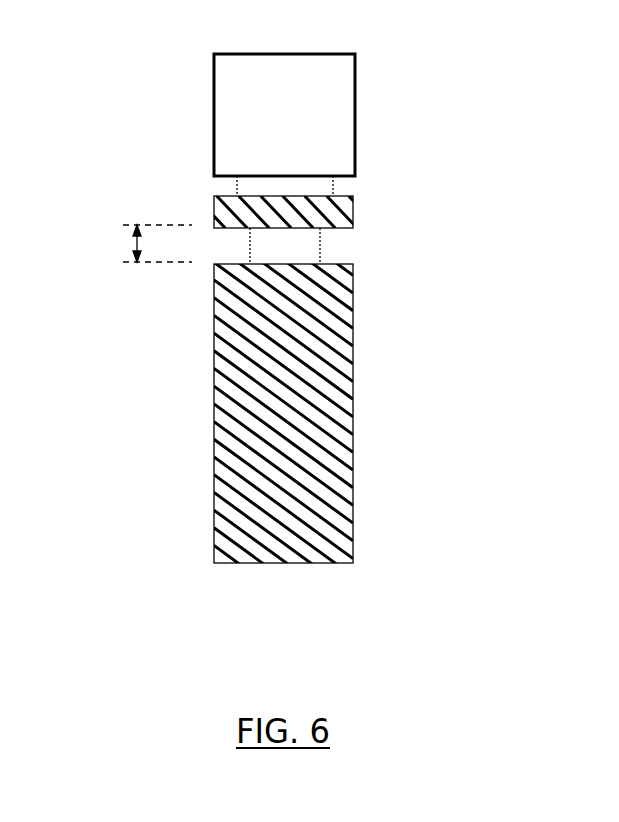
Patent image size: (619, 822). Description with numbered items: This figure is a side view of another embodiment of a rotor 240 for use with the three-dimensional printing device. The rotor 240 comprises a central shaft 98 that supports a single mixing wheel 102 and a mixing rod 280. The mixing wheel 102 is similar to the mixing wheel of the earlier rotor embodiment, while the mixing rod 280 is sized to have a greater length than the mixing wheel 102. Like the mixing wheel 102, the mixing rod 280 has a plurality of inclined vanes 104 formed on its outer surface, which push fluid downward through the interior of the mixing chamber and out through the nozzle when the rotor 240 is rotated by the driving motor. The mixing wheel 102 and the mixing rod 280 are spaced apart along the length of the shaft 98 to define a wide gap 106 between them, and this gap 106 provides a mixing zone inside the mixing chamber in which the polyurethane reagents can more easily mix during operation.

The rotor 240 is at (516, 59).
The mixing wheel 102 is at (345, 212).
The central shaft 98 is at (300, 246).
The gap 106 is at (136, 241).
The inclined vanes 104 is at (268, 378).
The mixing rod 280 is at (365, 410).